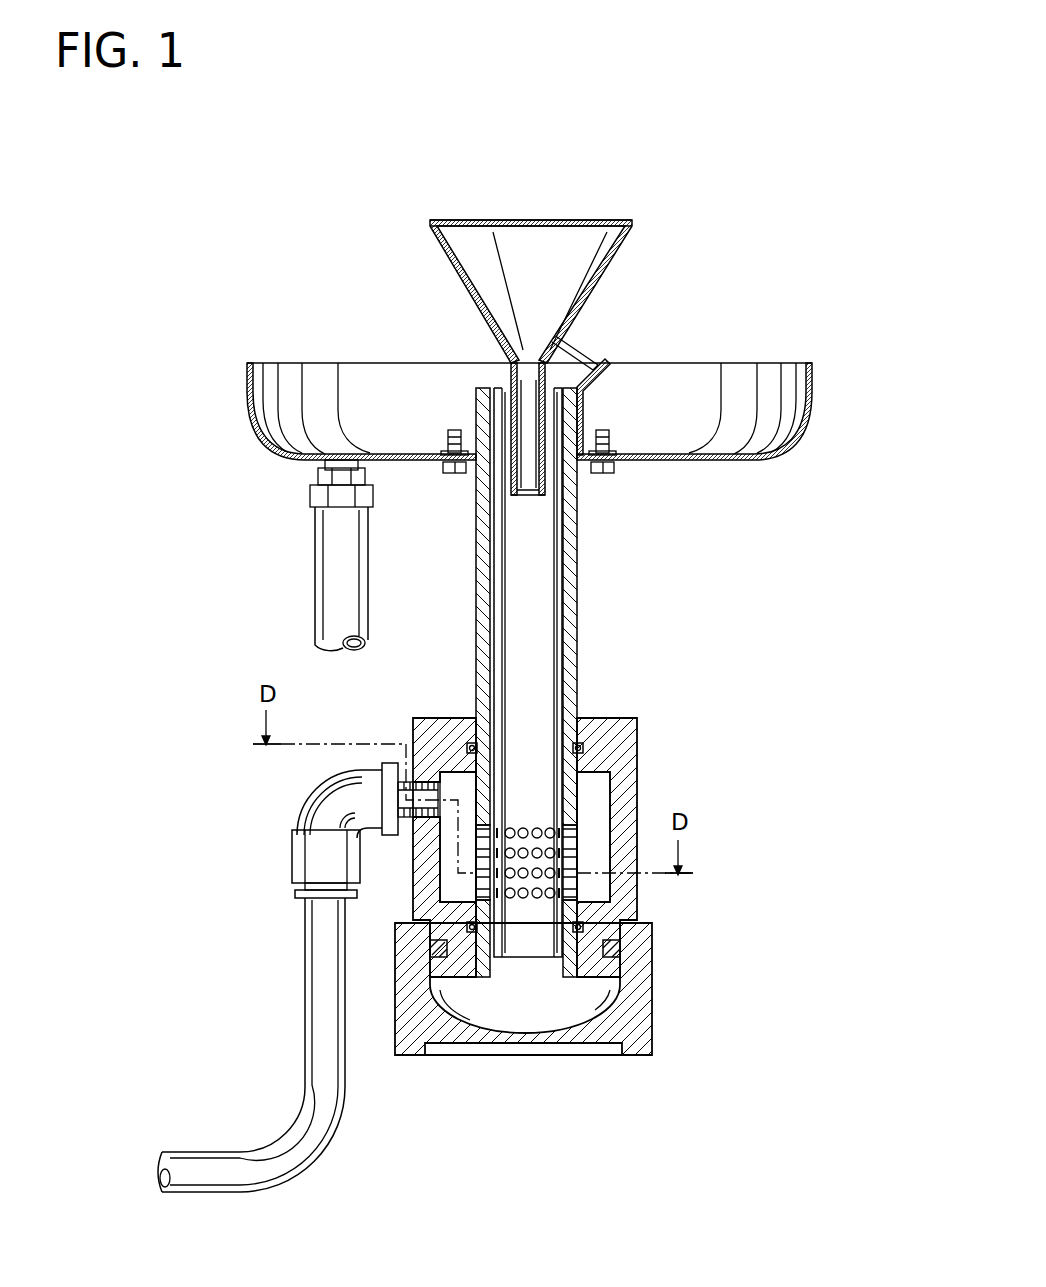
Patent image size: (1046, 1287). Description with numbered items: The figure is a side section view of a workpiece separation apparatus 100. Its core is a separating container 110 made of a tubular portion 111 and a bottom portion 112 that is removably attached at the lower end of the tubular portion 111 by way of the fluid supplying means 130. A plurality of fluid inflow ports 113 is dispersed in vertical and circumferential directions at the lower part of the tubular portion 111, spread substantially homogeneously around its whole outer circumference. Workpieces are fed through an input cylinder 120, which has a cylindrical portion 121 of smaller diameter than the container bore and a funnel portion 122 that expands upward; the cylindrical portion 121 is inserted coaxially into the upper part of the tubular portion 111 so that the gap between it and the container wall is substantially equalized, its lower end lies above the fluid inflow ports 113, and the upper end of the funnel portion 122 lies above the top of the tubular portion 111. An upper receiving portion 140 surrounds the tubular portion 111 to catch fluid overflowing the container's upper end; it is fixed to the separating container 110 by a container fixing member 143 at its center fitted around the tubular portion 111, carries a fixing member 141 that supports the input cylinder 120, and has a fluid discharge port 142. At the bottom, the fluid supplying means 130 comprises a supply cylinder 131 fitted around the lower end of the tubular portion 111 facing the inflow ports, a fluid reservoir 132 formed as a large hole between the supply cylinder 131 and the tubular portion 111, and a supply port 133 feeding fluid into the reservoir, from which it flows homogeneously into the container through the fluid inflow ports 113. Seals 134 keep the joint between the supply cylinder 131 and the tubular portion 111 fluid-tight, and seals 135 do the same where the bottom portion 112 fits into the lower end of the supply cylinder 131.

The workpiece separation apparatus 100 is at (703, 160).
The separating container 110 is at (752, 520).
The tubular portion 111 is at (573, 558).
The bottom portion 112 is at (637, 982).
The fluid inflow ports 113 is at (565, 836).
The input cylinder 120 is at (306, 180).
The cylindrical portion 121 is at (508, 378).
The funnel portion 122 is at (437, 247).
The fluid supplying means 130 is at (186, 625).
The supply cylinder 131 is at (425, 733).
The fluid reservoir 132 is at (448, 858).
The supply port 133 is at (420, 805).
The seals 134 is at (473, 740).
The seals 135 is at (395, 945).
The upper receiving portion 140 is at (403, 458).
The fixing member 141 is at (586, 358).
The fluid discharge port 142 is at (370, 465).
The container fixing member 143 is at (585, 413).